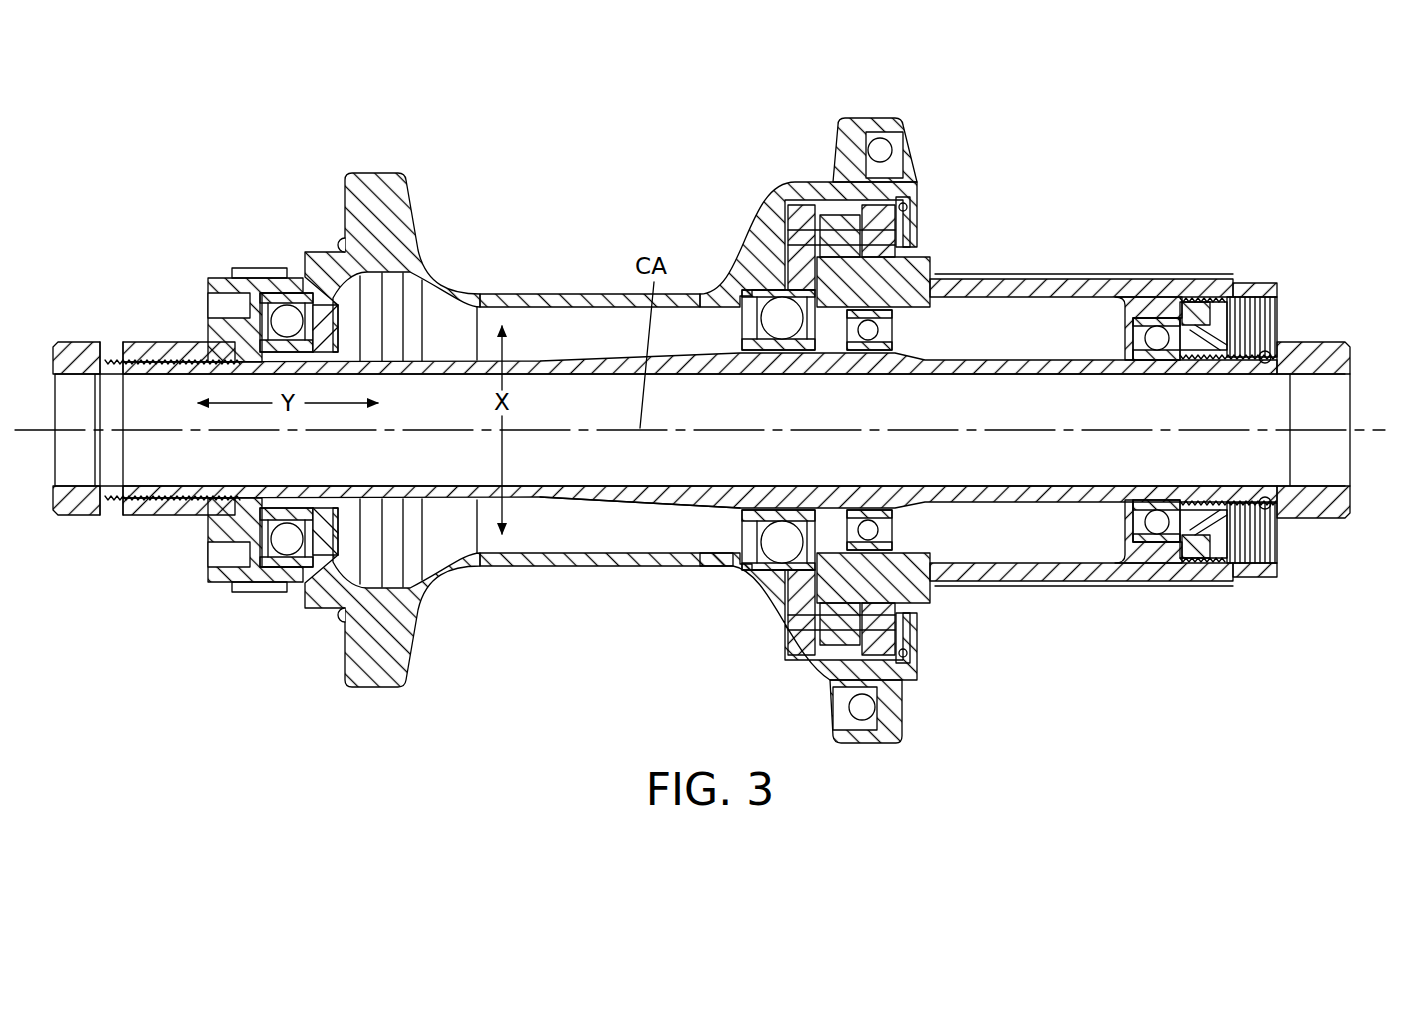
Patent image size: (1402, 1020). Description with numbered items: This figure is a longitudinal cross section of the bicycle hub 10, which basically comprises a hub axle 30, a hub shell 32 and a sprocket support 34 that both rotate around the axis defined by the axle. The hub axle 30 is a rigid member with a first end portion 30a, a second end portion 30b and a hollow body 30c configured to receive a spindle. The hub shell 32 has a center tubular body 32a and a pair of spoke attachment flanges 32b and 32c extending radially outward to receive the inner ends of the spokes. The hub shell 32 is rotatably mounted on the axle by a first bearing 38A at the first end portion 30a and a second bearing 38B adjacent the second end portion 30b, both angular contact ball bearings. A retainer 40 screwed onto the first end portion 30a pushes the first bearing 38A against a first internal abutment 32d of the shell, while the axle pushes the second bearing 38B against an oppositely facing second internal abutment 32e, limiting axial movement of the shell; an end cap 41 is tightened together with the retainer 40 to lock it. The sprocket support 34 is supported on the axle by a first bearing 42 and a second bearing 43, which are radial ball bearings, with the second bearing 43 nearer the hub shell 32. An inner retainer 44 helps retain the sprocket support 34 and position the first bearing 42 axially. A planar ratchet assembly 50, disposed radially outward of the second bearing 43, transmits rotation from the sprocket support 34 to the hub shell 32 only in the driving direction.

The hub 10 is at (1158, 146).
The hub axle 30 is at (584, 355).
The first end portion 30a is at (214, 500).
The second end portion 30b is at (1255, 518).
The hollow body 30c is at (541, 504).
The hub shell 32 is at (518, 290).
The center tubular body 32a is at (630, 568).
The spoke attachment flange 32b is at (380, 172).
The spoke attachment flange 32c is at (876, 118).
The first internal abutment 32d is at (290, 562).
The second internal abutment 32e is at (775, 575).
The sprocket support 34 is at (1041, 277).
The first bearing 38A is at (292, 299).
The second bearing 38B is at (770, 283).
The retainer 40 is at (184, 345).
The end cap 41 is at (71, 517).
The first bearing 42 is at (1131, 520).
The second bearing 43 is at (898, 331).
The inner retainer 44 is at (1316, 341).
The planar ratchet assembly 50 is at (906, 211).